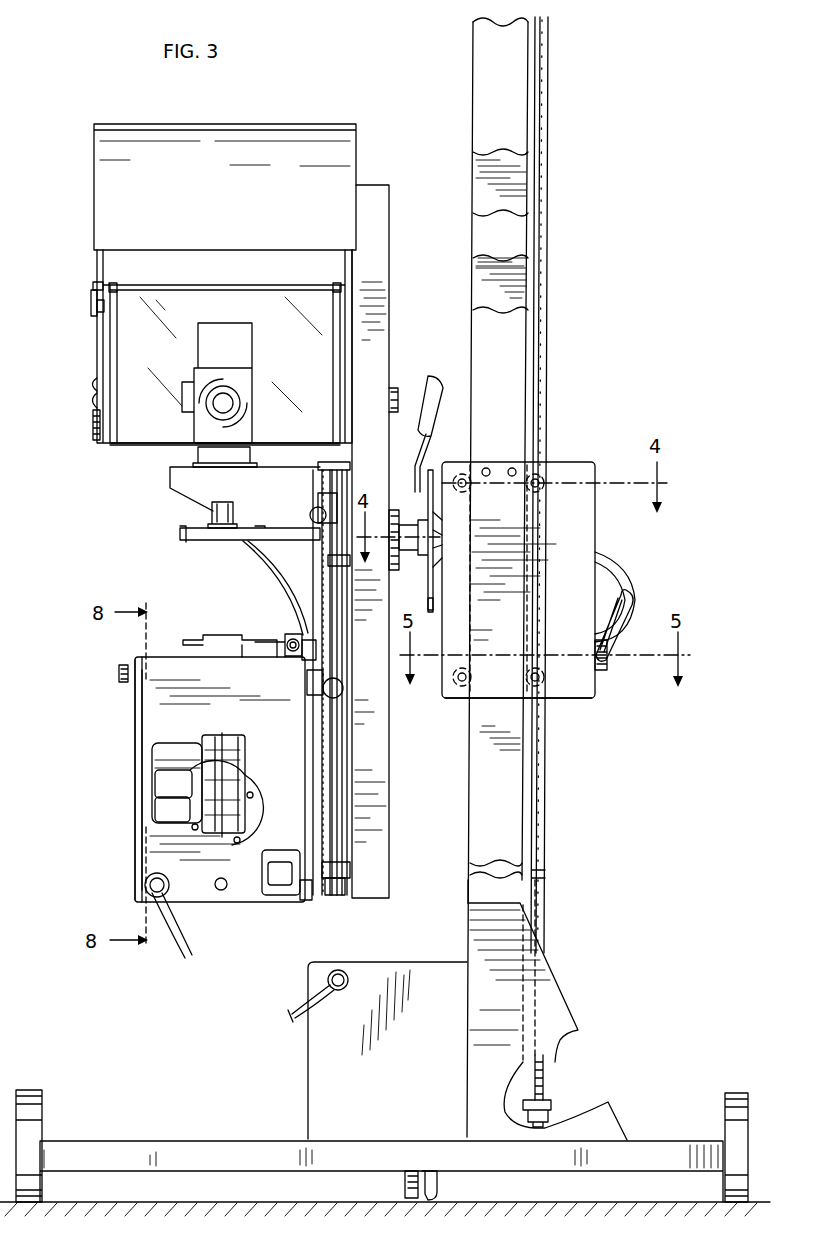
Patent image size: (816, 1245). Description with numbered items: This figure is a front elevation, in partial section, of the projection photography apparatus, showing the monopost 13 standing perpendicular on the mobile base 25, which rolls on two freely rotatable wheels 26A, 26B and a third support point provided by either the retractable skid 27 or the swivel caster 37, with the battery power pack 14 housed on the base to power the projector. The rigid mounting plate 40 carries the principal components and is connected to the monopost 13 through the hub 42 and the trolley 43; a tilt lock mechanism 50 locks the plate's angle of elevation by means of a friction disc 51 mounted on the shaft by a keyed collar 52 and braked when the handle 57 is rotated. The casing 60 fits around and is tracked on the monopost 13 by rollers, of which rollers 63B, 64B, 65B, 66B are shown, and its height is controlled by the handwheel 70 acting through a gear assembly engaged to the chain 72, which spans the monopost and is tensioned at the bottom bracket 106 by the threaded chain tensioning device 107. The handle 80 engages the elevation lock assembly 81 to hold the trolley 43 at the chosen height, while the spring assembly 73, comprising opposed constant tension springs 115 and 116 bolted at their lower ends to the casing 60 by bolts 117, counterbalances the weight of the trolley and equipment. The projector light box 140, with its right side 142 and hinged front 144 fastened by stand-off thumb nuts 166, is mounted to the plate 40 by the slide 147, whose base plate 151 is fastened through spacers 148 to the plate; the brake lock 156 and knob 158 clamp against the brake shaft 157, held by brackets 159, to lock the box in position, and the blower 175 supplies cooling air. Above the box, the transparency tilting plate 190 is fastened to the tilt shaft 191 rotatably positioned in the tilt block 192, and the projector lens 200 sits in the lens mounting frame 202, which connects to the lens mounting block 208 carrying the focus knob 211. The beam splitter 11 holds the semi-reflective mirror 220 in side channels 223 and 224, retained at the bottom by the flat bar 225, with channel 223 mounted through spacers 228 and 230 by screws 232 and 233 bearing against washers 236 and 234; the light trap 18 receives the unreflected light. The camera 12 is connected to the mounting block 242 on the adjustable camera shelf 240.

The light trap 18 is at (86, 189).
The beam splitter 11 is at (122, 450).
The semi-reflective mirror 220 is at (128, 356).
The side channel 223 is at (113, 283).
The side channel 224 is at (338, 283).
The camera 12 is at (255, 361).
The washer 236 is at (93, 287).
The screw 232 is at (91, 305).
The spacer 228 is at (99, 318).
The washer 234 is at (92, 385).
The screw 233 is at (92, 400).
The spacer 230 is at (97, 422).
The mounting block 242 is at (245, 460).
The flat bar 225 is at (157, 447).
The camera shelf 240 is at (245, 557).
The projector lens 200 is at (216, 514).
The lens mounting frame 202 is at (188, 534).
The lens mounting block 208 is at (325, 503).
The focus knob 211 is at (311, 515).
The spacers 148 is at (349, 781).
The brake shaft 157 is at (336, 826).
The slide 147 is at (322, 843).
The brake lock 156 is at (310, 688).
The knob 158 is at (340, 690).
The brackets 159 is at (343, 872).
The base plate 151 is at (305, 901).
The mounting plate 40 is at (354, 812).
The hub 42 is at (393, 573).
The keyed collar 52 is at (436, 523).
The tilt lock mechanism 50 is at (440, 586).
The friction disc 51 is at (432, 607).
The handle 57 is at (422, 451).
The trolley 43 is at (606, 535).
The casing 60 is at (590, 684).
The roller 63B is at (470, 475).
The roller 64B is at (543, 480).
The roller 65B is at (462, 688).
The roller 66B is at (543, 686).
The bolts 117 is at (516, 468).
The handwheel 70 is at (608, 580).
The handle 80 is at (632, 598).
The elevation lock assembly 81 is at (608, 662).
The constant tension spring 116 is at (513, 108).
The spring assembly 73 is at (545, 160).
The constant tension spring 115 is at (526, 272).
The chain 72 is at (541, 820).
The monopost 13 is at (456, 855).
The light box 140 is at (150, 716).
The front 144 is at (135, 808).
The right side 142 is at (295, 771).
The stand-off thumb nuts 166 is at (119, 673).
The transparency tilting plate 190 is at (194, 640).
The tilt shaft 191 is at (271, 642).
The tilt block 192 is at (318, 665).
The blower 175 is at (212, 745).
The battery power pack 14 is at (377, 1101).
The chain tensioning device 107 is at (545, 1093).
The bottom bracket 106 is at (553, 1103).
The base 25 is at (202, 1148).
The wheel 26A is at (30, 1110).
The wheel 26B is at (735, 1108).
The swivel caster 37 is at (404, 1183).
The retractable skid 27 is at (440, 1197).